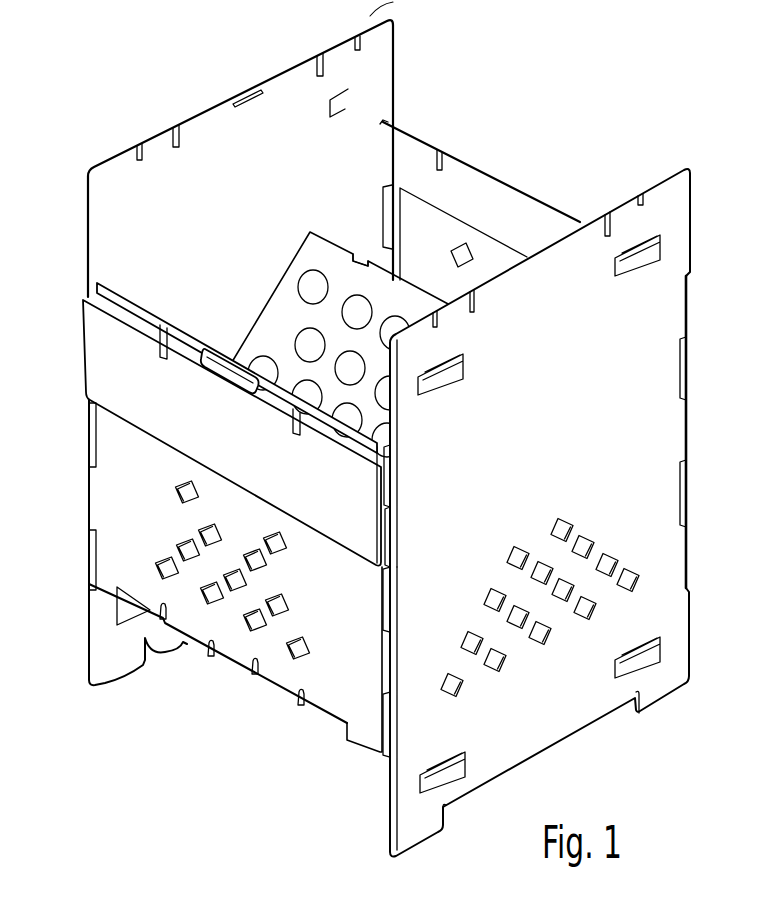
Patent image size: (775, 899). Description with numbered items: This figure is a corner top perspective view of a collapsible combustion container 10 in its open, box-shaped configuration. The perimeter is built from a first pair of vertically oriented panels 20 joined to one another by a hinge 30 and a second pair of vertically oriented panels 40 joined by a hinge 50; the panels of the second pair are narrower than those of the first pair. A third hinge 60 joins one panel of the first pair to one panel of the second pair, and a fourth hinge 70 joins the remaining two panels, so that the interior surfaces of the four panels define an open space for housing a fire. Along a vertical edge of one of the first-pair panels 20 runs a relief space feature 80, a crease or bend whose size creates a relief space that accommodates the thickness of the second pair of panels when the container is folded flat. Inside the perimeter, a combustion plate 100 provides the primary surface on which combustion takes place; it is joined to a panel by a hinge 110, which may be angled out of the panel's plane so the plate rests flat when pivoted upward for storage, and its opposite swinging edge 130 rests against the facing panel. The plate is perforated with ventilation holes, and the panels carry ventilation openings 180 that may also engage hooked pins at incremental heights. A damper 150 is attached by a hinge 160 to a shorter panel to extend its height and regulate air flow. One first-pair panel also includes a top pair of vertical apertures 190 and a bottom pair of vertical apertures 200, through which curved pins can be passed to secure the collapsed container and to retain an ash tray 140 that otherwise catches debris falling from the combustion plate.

The container 10 is at (666, 144).
The first pair of vertically oriented panels 20 is at (387, 753).
The hinge 30 is at (400, 573).
The second pair of vertically oriented panels 40 is at (415, 130).
The hinge 50 is at (400, 188).
The third hinge 60 is at (89, 423).
The fourth hinge 70 is at (688, 423).
The relief space feature 80 is at (393, 423).
The combustion plate 100 is at (337, 323).
The hinge 110 is at (180, 650).
The swinging edge 130 is at (409, 280).
The ash tray 140 is at (283, 588).
The damper 150 is at (93, 350).
The hinge 160 is at (197, 333).
The ventilation openings 180 is at (613, 547).
The top pair of vertical apertures 190 is at (643, 233).
The bottom pair of vertical apertures 200 is at (643, 640).